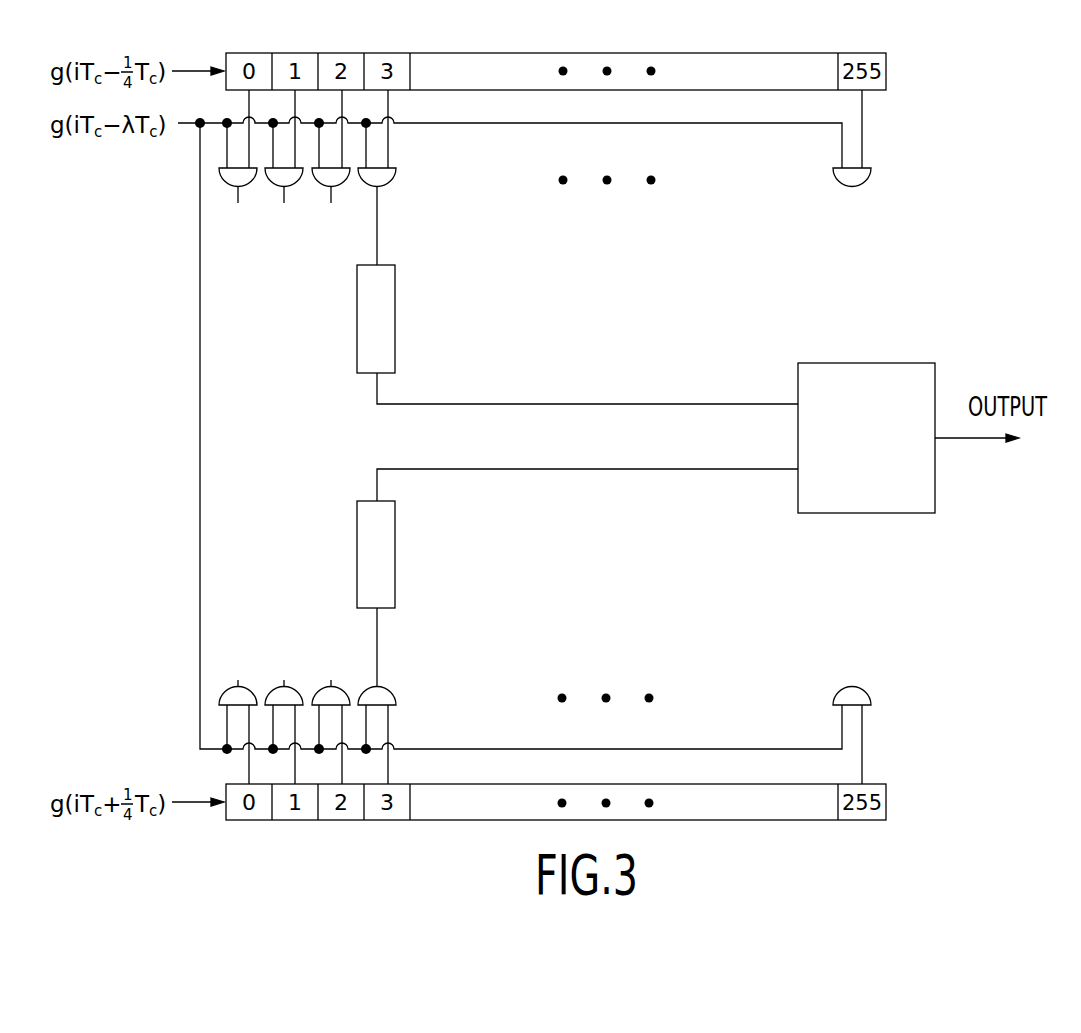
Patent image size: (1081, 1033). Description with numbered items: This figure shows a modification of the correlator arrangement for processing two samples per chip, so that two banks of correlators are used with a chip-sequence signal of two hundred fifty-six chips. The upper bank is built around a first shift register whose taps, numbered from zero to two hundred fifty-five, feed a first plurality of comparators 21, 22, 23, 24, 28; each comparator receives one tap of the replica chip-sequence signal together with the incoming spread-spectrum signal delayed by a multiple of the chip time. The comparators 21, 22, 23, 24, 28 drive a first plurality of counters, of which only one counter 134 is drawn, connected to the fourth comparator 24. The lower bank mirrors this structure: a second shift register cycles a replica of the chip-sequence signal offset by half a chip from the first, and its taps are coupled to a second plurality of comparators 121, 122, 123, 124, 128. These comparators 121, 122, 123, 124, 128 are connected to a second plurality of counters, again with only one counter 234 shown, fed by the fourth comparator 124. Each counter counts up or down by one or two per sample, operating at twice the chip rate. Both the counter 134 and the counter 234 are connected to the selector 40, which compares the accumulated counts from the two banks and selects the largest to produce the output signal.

The comparator 21 is at (248, 186).
The comparator 22 is at (294, 186).
The comparator 23 is at (341, 186).
The comparator 24 is at (387, 186).
The comparator 28 is at (861, 186).
The counter 134 is at (395, 331).
The counter 234 is at (395, 566).
The selector 40 is at (867, 363).
The comparator 121 is at (248, 687).
The comparator 122 is at (294, 687).
The comparator 123 is at (341, 687).
The comparator 124 is at (387, 687).
The comparator 128 is at (858, 687).